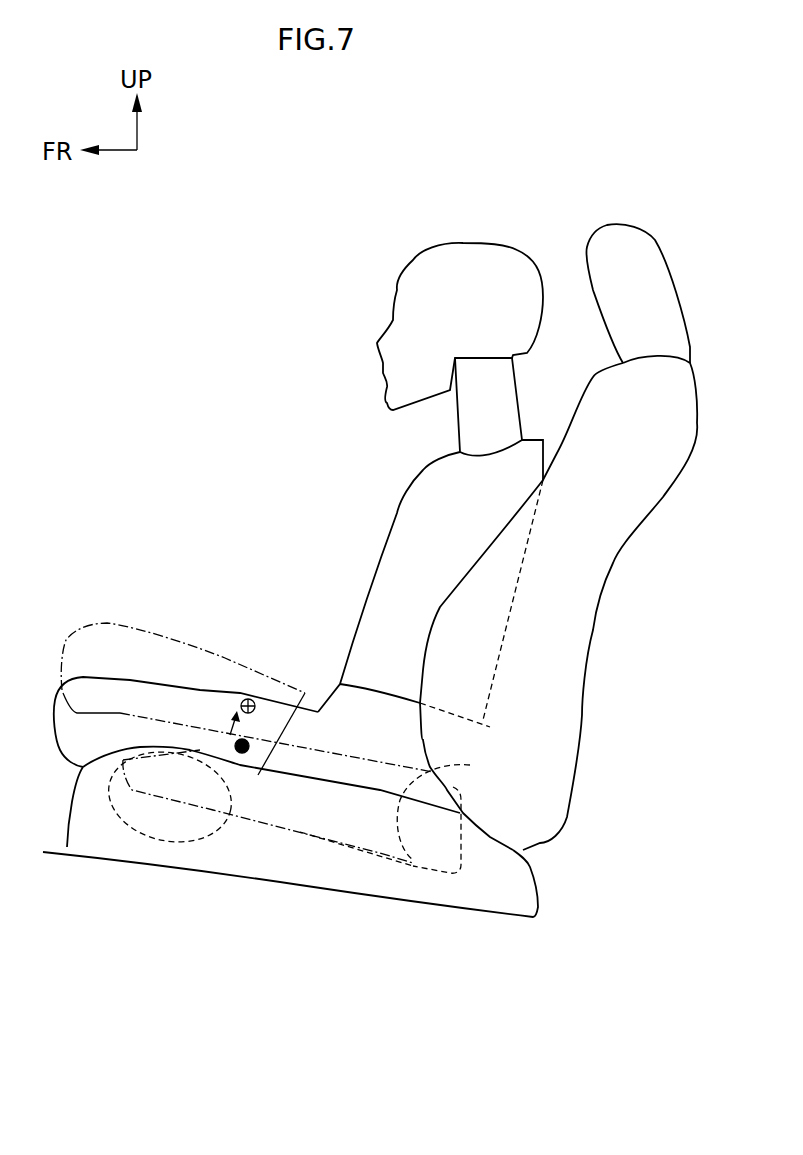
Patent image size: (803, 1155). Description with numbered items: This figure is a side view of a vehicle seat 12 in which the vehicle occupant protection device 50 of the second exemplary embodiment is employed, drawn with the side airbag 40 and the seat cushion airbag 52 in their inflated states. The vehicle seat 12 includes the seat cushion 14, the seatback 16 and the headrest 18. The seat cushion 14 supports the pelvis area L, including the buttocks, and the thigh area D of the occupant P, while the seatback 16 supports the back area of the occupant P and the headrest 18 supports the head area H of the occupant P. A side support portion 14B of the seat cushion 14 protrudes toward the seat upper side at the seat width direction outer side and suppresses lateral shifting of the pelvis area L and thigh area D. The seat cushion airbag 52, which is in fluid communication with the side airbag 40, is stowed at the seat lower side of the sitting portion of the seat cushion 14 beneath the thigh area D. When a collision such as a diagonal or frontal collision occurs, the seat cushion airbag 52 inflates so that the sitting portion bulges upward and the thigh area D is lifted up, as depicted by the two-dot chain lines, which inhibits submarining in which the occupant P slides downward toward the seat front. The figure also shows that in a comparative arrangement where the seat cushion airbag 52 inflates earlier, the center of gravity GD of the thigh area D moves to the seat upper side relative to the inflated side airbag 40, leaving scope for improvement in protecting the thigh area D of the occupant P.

The vehicle seat 12 is at (381, 570).
The seat cushion 14 is at (542, 879).
The side support portion 14B is at (410, 790).
The seatback 16 is at (597, 620).
The headrest 18 is at (653, 250).
The side airbag 40 is at (414, 872).
The vehicle occupant protection device 50 is at (198, 857).
The seat cushion airbag 52 is at (220, 840).
The occupant P is at (298, 487).
The head area H is at (501, 258).
The pelvis area L is at (337, 692).
The thigh area D is at (180, 677).
The center of gravity of the thigh area GD is at (248, 706).